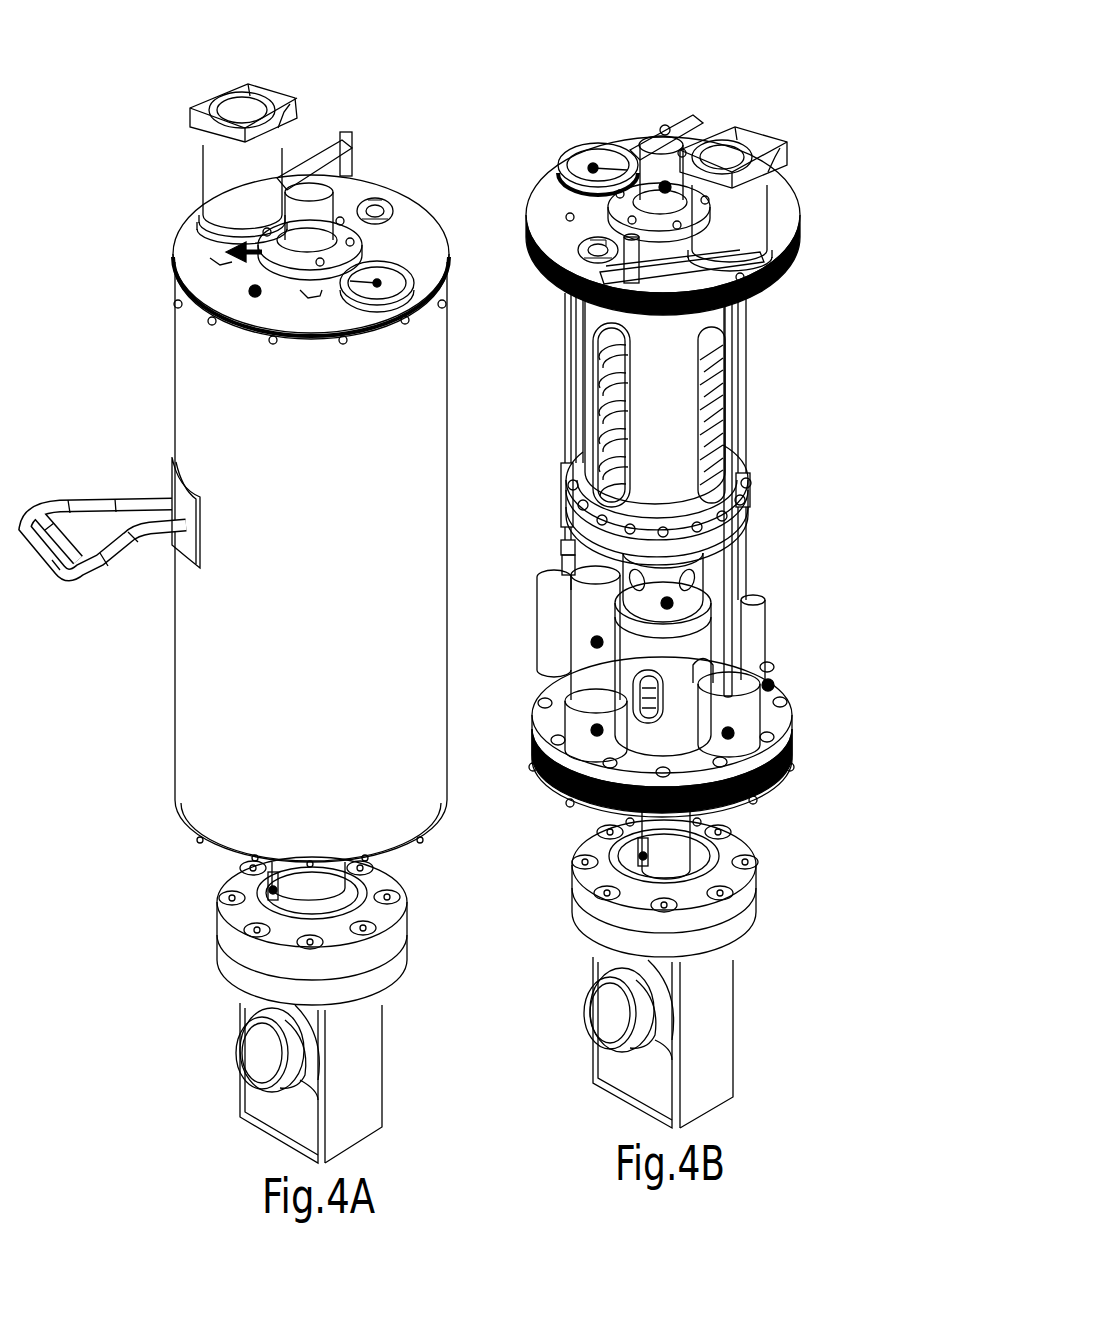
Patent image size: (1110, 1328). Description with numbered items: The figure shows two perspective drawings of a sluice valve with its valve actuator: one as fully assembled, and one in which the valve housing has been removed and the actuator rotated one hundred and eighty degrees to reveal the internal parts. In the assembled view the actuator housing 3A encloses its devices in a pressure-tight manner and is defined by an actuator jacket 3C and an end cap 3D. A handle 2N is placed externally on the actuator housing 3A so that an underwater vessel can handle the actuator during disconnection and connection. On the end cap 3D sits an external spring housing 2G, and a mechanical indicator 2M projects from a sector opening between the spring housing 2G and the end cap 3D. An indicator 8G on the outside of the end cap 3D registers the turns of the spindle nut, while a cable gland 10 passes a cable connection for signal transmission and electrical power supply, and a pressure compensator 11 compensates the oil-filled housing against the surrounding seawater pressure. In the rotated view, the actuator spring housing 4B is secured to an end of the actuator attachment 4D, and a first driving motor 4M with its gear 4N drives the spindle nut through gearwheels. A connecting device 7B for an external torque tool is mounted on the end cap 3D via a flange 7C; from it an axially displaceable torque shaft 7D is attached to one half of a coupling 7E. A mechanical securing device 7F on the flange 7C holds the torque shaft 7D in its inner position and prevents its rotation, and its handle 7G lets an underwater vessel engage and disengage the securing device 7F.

In FIG. 4A, the actuator housing 3A is at (385, 130).
In FIG. 4B, the spring housing 2G is at (663, 183).
In FIG. 4A, the mechanical indicator 2M is at (237, 248).
In FIG. 4A, the handle 2N is at (112, 505).
In FIG. 4A, the actuator jacket 3C is at (236, 652).
In FIG. 4A, the end cap 3D is at (250, 293).
In FIG. 4B, the actuator spring housing 4B is at (660, 427).
In FIG. 4B, the actuator attachment 4D is at (670, 605).
In FIG. 4B, the first driving motor 4M is at (592, 643).
In FIG. 4B, the gear 4N is at (594, 732).
In FIG. 4B, the connecting device 7B is at (745, 118).
In FIG. 4B, the flange 7C is at (758, 297).
In FIG. 4B, the torque shaft 7D is at (730, 596).
In FIG. 4B, the coupling 7E is at (731, 736).
In FIG. 4B, the mechanical securing device 7F is at (720, 312).
In FIG. 4B, the handle 7G is at (565, 300).
In FIG. 4A, the indicator 8G is at (400, 250).
In FIG. 4B, the cable gland 10 is at (580, 245).
In FIG. 4B, the pressure compensator 11 is at (543, 575).